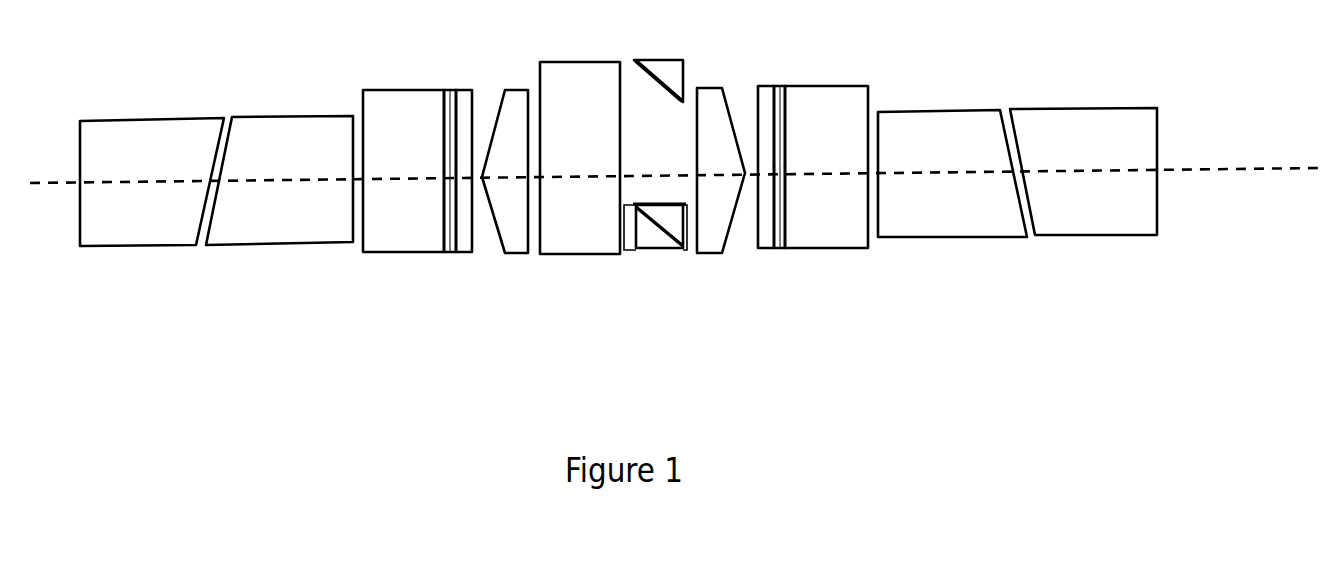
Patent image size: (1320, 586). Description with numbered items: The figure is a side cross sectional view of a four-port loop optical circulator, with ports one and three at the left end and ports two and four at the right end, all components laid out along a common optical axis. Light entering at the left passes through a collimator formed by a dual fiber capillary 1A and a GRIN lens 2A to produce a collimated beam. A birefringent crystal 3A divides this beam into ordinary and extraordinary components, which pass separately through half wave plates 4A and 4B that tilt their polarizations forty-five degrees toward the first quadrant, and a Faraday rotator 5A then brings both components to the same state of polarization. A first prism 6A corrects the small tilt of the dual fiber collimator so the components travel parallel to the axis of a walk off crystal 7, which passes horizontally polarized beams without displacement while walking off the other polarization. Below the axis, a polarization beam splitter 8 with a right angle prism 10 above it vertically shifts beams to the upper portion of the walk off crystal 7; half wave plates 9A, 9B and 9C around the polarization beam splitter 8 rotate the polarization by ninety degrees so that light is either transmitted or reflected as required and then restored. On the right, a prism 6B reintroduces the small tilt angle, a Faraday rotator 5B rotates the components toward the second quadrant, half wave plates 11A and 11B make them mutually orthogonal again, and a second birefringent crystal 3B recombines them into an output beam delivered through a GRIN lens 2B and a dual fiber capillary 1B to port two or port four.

The dual fiber capillary 1A is at (172, 140).
The GRIN lens 2A is at (292, 132).
The birefringent crystal 3A is at (395, 110).
The half wave plate 4A is at (453, 98).
The half wave plate 4B is at (452, 242).
The Faraday rotator 5A is at (463, 98).
The first prism 6A is at (509, 241).
The walk off crystal 7 is at (583, 88).
The polarization beam splitter 8 is at (657, 243).
The half wave plate 9A is at (630, 245).
The half wave plate 9B is at (688, 243).
The half wave plate 9C is at (650, 203).
The right angle prism 10 is at (662, 72).
The prism 6B is at (707, 100).
The Faraday rotator 5B is at (765, 92).
The half-wave plate 11A is at (782, 92).
The half-wave plate 11B is at (782, 240).
The second birefringent crystal 3B is at (857, 103).
The GRIN lens 2B is at (947, 123).
The dual fiber capillary 1B is at (1068, 130).